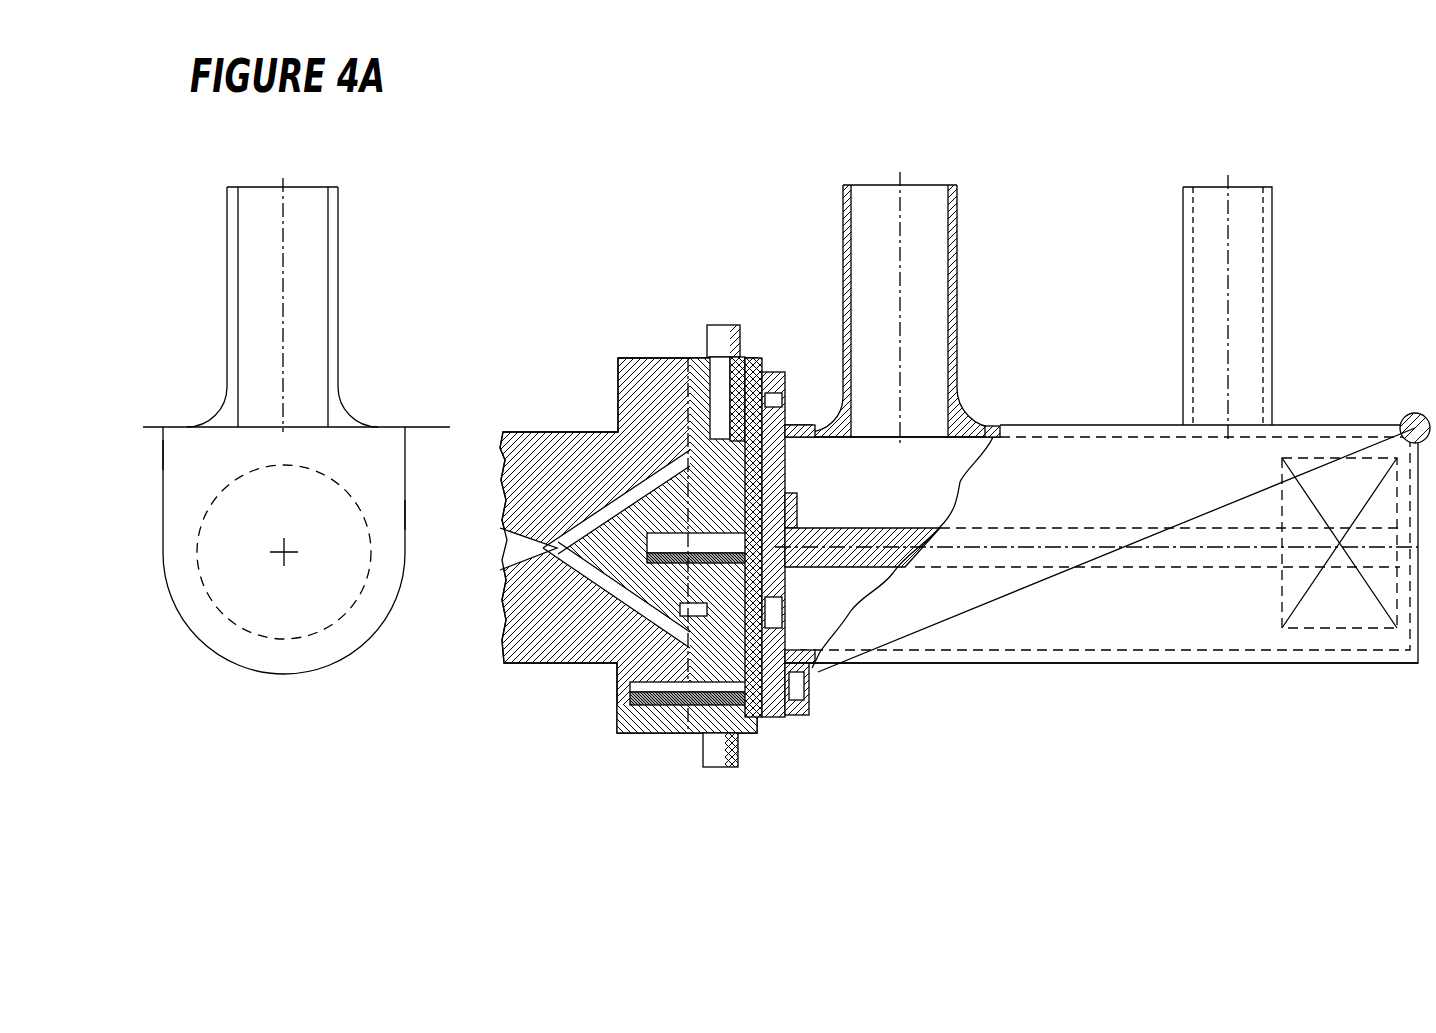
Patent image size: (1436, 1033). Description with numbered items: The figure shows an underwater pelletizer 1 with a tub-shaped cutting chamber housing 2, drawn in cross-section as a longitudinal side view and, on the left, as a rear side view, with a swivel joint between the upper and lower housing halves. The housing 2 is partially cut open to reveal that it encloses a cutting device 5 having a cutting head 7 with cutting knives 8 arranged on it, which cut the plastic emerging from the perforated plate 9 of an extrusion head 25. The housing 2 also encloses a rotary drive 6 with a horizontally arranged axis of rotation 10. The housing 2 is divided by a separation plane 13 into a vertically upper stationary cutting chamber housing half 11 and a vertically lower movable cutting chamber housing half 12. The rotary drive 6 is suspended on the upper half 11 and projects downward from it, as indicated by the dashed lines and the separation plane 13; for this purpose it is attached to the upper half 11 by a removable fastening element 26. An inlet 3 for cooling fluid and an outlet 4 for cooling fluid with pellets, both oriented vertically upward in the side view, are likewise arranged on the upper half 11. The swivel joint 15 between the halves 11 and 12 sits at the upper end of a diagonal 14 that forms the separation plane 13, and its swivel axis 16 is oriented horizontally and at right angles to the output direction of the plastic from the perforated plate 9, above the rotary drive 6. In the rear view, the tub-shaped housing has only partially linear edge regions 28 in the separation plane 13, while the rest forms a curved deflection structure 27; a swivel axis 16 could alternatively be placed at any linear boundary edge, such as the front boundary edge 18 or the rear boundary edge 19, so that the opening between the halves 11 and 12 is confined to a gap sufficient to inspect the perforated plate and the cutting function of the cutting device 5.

The underwater pelletizer 1 is at (735, 444).
The cutting chamber housing 2 is at (1280, 408).
The inlet for cooling fluid 3 is at (330, 216).
The outlet for cooling fluid with pellets 4 is at (336, 262).
The cutting device 5 is at (812, 514).
The rotary drive 6 is at (1362, 615).
The cutting head 7 is at (796, 580).
The cutting knives 8 is at (778, 452).
The perforated plate 9 is at (699, 356).
The axis of rotation 10 is at (1026, 530).
The upper stationary cutting chamber housing half 11 is at (1040, 432).
The lower movable cutting chamber housing half 12 is at (1210, 640).
The separation plane 13 is at (1137, 530).
The diagonal 14 is at (1012, 604).
The swivel joint 15 is at (427, 425).
The swivel axis 16 is at (130, 425).
The front boundary edge 18 is at (163, 508).
The rear boundary edge 19 is at (408, 478).
The extrusion head 25 is at (578, 648).
The removable fastening element 26 is at (325, 604).
The curved deflection structure 27 is at (305, 673).
The linear edge regions 28 is at (162, 452).